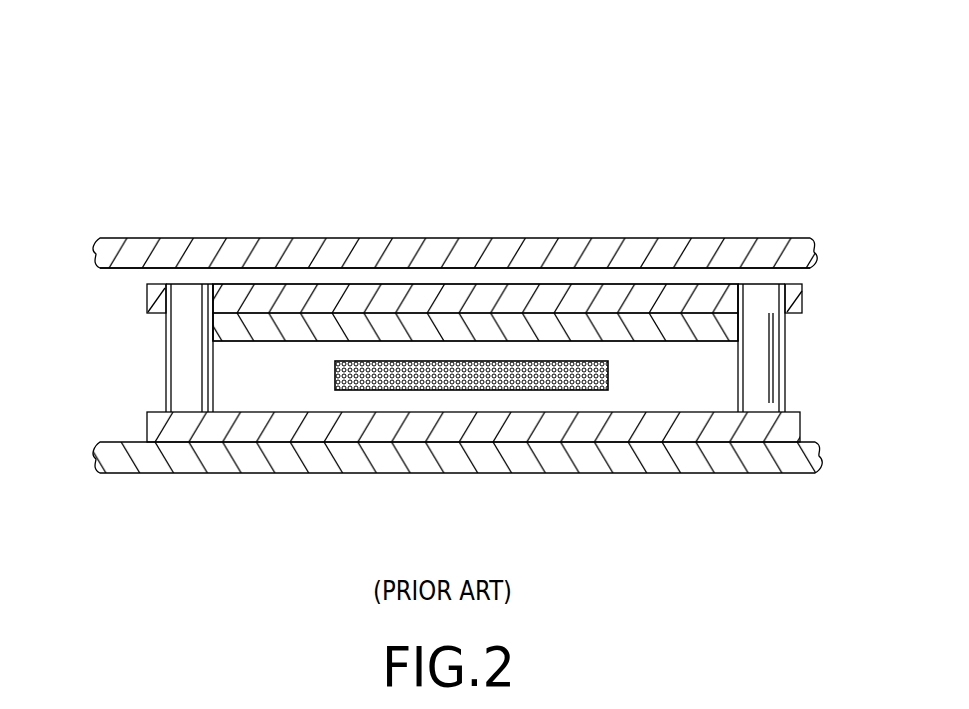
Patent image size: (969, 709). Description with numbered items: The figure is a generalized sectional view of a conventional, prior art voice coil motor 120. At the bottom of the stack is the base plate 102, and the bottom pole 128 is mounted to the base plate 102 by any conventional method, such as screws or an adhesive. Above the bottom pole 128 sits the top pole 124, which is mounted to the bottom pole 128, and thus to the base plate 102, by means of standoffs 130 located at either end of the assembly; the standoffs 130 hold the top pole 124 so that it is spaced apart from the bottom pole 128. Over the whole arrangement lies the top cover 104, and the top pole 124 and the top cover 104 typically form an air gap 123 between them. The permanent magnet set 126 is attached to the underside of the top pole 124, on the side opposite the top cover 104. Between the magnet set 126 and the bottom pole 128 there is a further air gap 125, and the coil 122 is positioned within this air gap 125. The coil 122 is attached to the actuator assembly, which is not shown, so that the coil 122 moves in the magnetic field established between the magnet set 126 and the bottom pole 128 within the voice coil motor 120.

The voice coil motor 120 is at (143, 156).
The base plate 102 is at (742, 458).
The top cover 104 is at (722, 241).
The coil 122 is at (335, 375).
The air gap 123 is at (165, 276).
The top pole 124 is at (268, 293).
The air gap 125 is at (632, 357).
The permanent magnet set 126 is at (650, 328).
The bottom pole 128 is at (612, 430).
The standoffs 130 is at (180, 359).